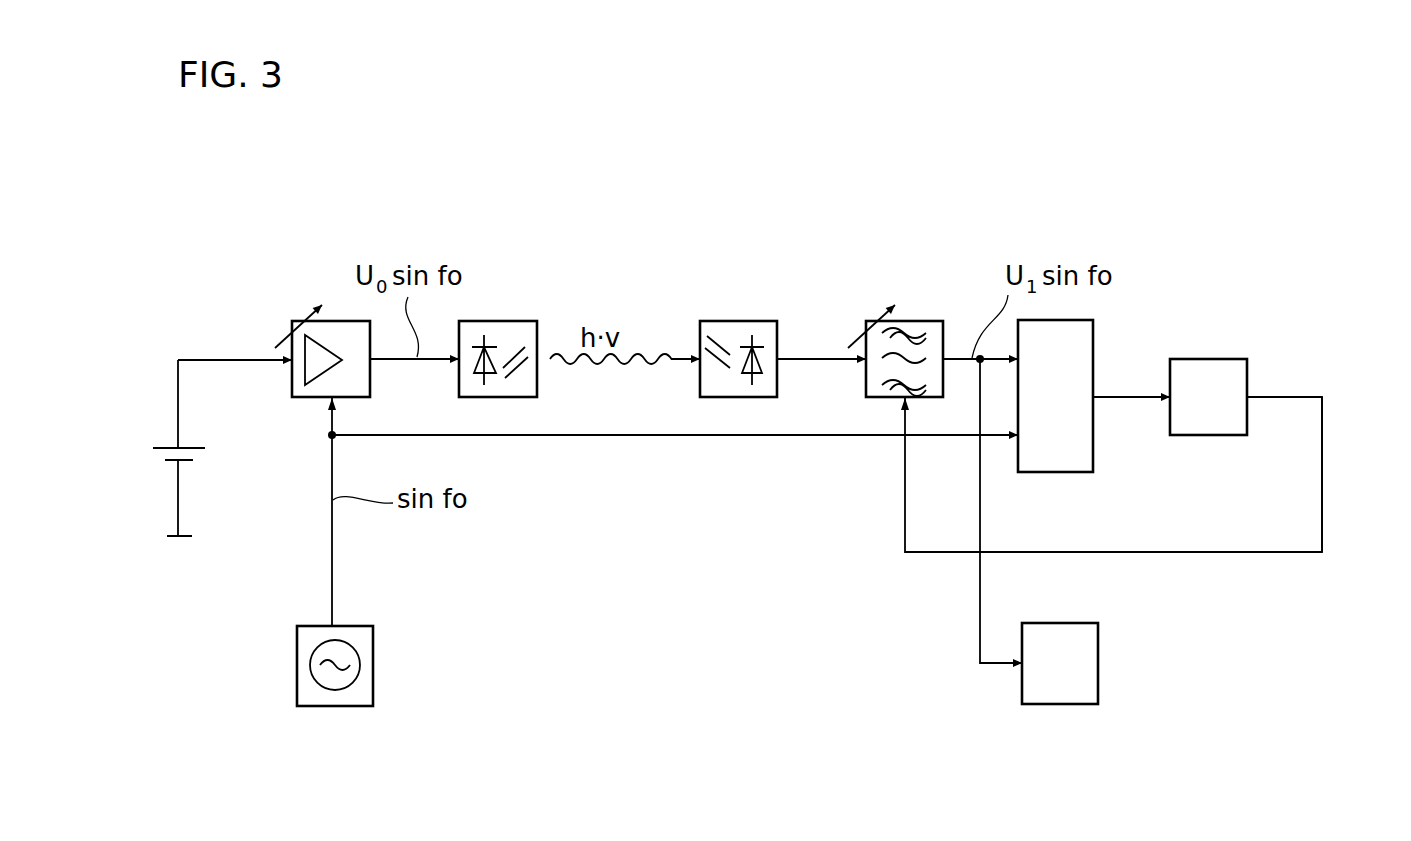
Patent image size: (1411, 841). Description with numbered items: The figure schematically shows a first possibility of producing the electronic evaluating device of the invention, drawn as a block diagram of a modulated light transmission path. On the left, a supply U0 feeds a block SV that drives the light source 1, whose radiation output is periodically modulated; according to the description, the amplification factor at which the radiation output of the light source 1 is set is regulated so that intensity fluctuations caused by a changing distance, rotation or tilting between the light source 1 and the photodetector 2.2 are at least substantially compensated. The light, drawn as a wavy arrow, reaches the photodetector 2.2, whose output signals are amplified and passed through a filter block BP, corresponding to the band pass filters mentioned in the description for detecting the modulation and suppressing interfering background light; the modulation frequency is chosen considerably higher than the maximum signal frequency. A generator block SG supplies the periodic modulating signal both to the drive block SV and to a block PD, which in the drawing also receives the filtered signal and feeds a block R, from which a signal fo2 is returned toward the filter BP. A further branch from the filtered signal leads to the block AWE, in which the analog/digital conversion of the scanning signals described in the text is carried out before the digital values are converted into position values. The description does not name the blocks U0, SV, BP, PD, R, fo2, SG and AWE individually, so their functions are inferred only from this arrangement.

The supply voltage source U0 is at (134, 430).
The variable amplifier SV is at (317, 398).
The light source 1 is at (522, 320).
The structured photodetector 2.2 is at (713, 320).
The band-pass filter BP is at (915, 320).
The phase detector PD is at (1094, 458).
The controller R is at (1223, 437).
The filter frequency control fo2 is at (1322, 440).
The signal generator SG is at (353, 625).
The sample-and-hold / A-D evaluation unit AWE is at (1098, 650).